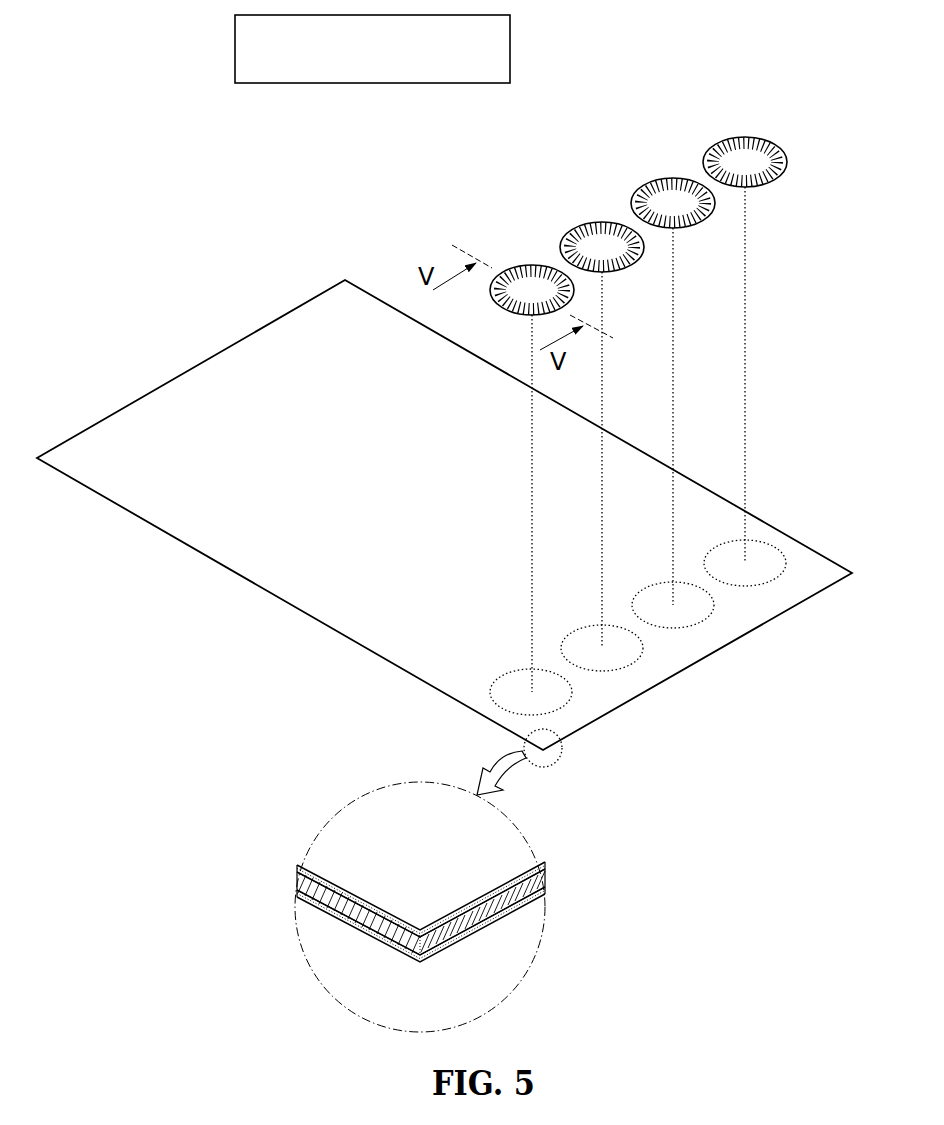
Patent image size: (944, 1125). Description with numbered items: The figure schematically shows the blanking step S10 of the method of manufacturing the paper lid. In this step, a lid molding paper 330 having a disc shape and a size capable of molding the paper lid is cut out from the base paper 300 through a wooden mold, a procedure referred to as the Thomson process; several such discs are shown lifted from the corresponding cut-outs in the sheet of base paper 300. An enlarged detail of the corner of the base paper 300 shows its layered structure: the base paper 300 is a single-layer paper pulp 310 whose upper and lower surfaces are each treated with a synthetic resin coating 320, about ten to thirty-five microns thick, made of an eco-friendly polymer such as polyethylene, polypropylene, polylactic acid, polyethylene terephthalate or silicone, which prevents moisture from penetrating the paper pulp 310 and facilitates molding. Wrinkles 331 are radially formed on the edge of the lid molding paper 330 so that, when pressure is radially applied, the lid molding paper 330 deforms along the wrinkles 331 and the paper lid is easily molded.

The blanking step S10 is at (512, 47).
The base paper 300 is at (214, 593).
The paper pulp 310 is at (300, 886).
The synthetic resin coating 320 is at (323, 868).
The lid molding paper 330 is at (672, 176).
The wrinkles 331 is at (722, 138).